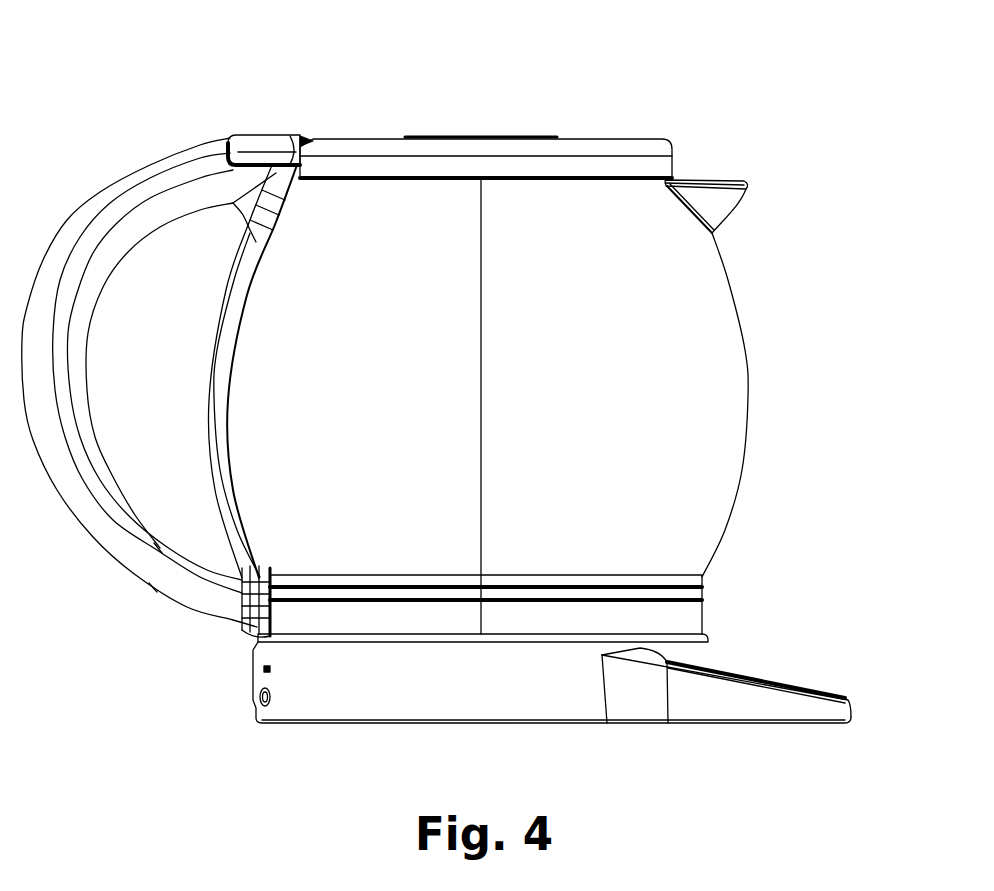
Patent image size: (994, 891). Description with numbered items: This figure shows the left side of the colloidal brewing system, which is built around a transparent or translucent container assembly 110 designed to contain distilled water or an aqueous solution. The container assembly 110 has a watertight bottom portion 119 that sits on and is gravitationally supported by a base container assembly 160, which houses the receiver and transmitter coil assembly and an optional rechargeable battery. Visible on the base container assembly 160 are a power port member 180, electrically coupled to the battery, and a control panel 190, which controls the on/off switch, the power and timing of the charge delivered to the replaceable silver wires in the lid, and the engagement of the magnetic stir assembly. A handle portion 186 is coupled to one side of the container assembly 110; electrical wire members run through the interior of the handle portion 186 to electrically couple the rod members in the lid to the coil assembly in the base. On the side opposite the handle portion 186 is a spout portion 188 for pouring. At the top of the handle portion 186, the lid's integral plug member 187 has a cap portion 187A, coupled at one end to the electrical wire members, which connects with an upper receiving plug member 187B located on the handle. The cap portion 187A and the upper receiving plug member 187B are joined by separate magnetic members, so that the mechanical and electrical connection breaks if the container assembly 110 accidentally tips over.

The container assembly 110 is at (750, 396).
The watertight bottom portion 119 is at (703, 612).
The base container assembly 160 is at (552, 708).
The power port member 180 is at (277, 705).
The handle portion 186 is at (156, 580).
The integral plug member 187 is at (248, 102).
The cap portion 187A is at (246, 140).
The upper receiving plug member 187B is at (290, 140).
The spout portion 188 is at (748, 184).
The control panel 190 is at (810, 678).